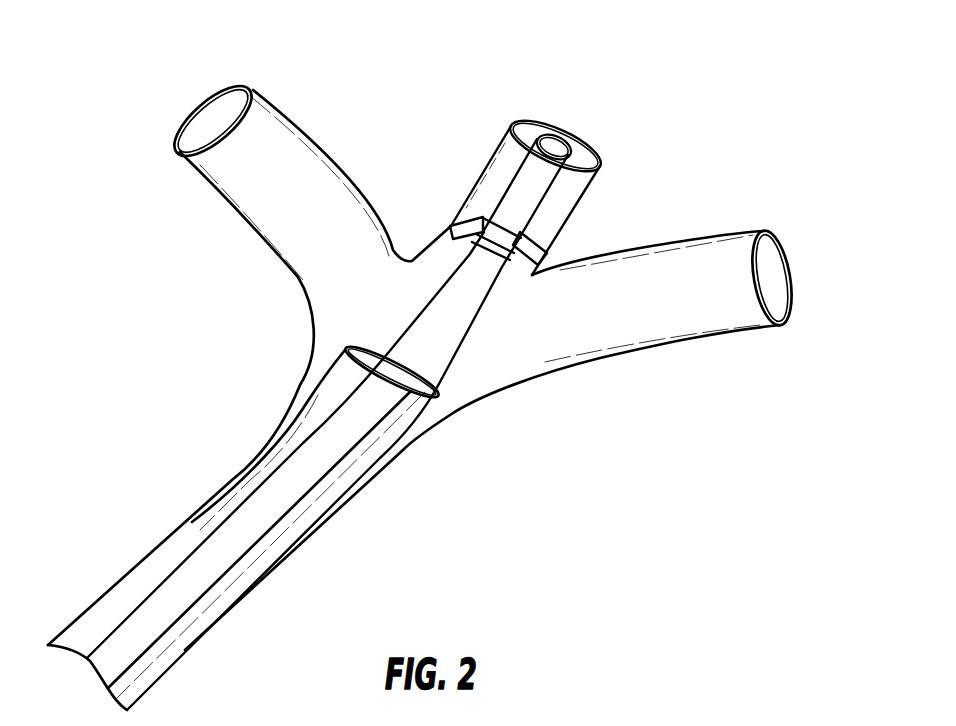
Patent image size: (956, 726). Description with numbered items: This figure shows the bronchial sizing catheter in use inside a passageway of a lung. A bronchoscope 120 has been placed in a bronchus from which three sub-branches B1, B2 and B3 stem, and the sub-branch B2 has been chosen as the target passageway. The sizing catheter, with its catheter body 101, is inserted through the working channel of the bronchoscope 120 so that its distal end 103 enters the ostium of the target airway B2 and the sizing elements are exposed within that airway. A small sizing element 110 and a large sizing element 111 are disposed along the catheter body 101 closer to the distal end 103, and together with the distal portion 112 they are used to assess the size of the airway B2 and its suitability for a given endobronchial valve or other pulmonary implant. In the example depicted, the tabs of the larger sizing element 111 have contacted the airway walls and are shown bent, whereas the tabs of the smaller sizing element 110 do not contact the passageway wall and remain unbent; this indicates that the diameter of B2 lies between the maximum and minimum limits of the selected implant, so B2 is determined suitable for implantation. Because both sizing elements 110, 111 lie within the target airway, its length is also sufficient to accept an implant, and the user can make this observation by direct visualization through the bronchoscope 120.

The catheter body 101 is at (270, 497).
The distal end 103 is at (568, 133).
The small sizing element 110 is at (586, 189).
The large sizing element 111 is at (452, 222).
The distal portion 112 is at (522, 193).
The bronchoscope 120 is at (328, 485).
The sub-branch B1 is at (291, 123).
The target airway B2 is at (466, 200).
The sub-branch B3 is at (735, 233).